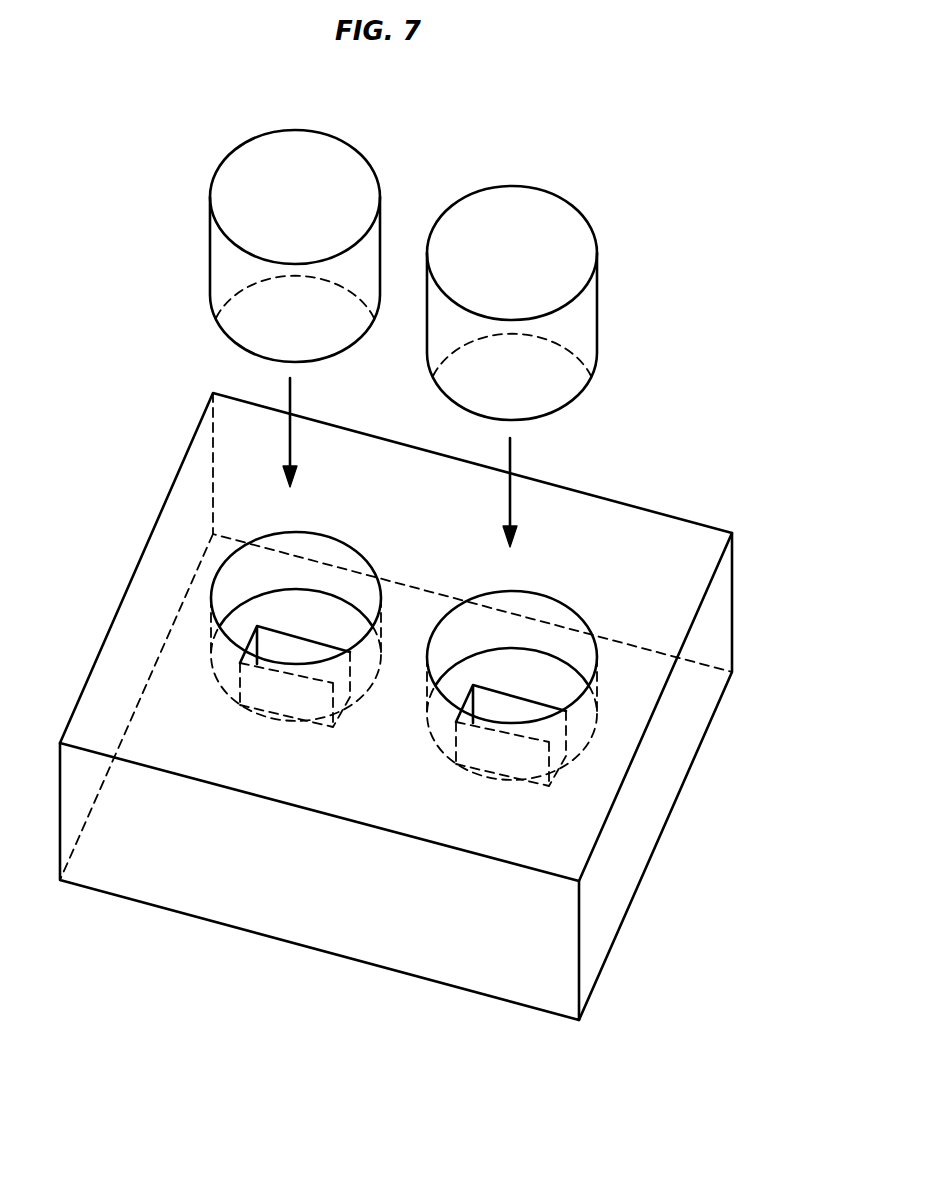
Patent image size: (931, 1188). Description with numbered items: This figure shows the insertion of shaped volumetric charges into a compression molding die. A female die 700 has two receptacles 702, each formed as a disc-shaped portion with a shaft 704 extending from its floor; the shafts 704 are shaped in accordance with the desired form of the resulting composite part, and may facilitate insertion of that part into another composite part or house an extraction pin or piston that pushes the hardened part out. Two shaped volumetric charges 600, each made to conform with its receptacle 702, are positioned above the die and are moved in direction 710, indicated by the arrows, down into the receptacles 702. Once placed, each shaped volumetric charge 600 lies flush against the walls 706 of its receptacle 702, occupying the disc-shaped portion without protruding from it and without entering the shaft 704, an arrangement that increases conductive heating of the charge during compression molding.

The shaped volumetric charge 600 is at (226, 152).
The female die 700 is at (732, 582).
The receptacle 702 is at (567, 648).
The shaft 704 is at (305, 640).
The wall 706 is at (563, 602).
The direction 710 is at (512, 458).